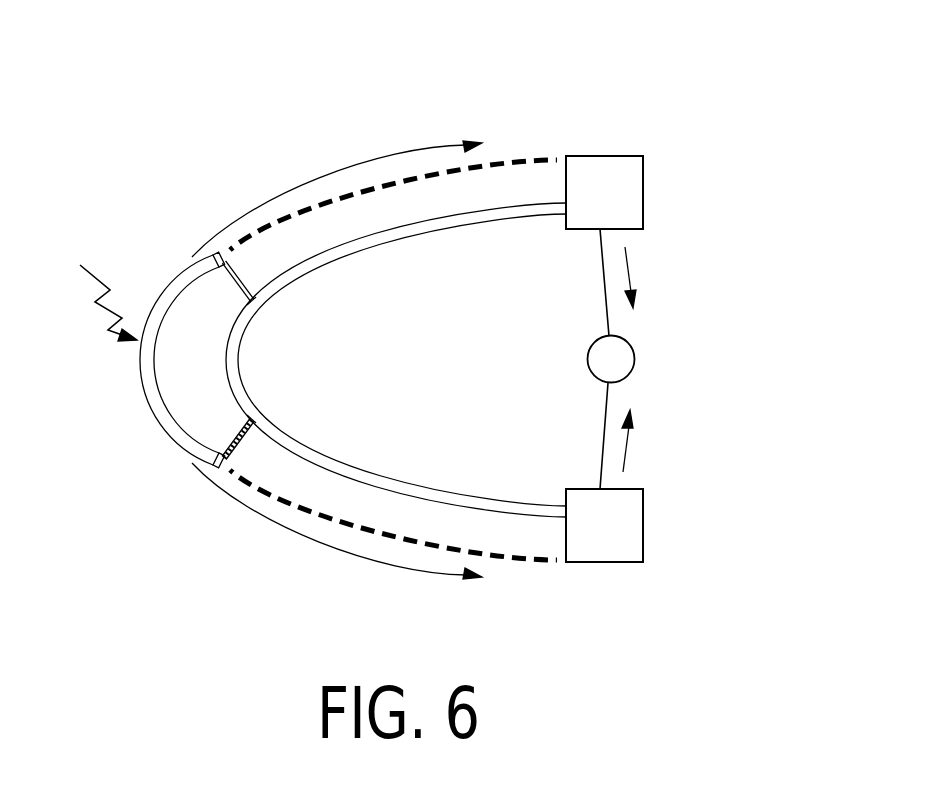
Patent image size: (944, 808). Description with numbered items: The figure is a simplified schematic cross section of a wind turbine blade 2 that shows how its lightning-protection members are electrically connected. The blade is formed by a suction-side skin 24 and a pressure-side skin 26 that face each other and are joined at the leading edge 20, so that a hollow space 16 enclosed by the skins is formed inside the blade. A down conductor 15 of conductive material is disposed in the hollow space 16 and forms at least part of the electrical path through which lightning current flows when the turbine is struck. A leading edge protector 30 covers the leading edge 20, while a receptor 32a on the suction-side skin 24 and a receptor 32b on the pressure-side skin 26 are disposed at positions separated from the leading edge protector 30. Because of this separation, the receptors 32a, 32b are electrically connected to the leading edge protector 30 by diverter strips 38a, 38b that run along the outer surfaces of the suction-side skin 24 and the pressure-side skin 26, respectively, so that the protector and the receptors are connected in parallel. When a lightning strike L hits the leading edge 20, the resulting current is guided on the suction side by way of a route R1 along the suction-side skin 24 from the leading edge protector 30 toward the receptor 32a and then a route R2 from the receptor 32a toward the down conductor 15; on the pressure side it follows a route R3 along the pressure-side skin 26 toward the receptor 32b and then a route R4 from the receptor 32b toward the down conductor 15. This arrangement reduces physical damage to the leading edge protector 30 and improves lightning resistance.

The wind turbine blade 2 is at (692, 68).
The down conductor 15 is at (634, 352).
The hollow space 16 is at (458, 375).
The leading edge 20 is at (156, 262).
The suction-side skin 24 is at (408, 240).
The pressure-side skin 26 is at (403, 480).
The leading edge protector 30 is at (178, 423).
The receptor 32a is at (600, 156).
The receptor 32b is at (600, 562).
The diverter strip 38a is at (517, 160).
The diverter strip 38b is at (553, 563).
The lightning strike L is at (97, 295).
The route R1 is at (312, 178).
The route R2 is at (631, 263).
The route R3 is at (325, 543).
The route R4 is at (628, 445).